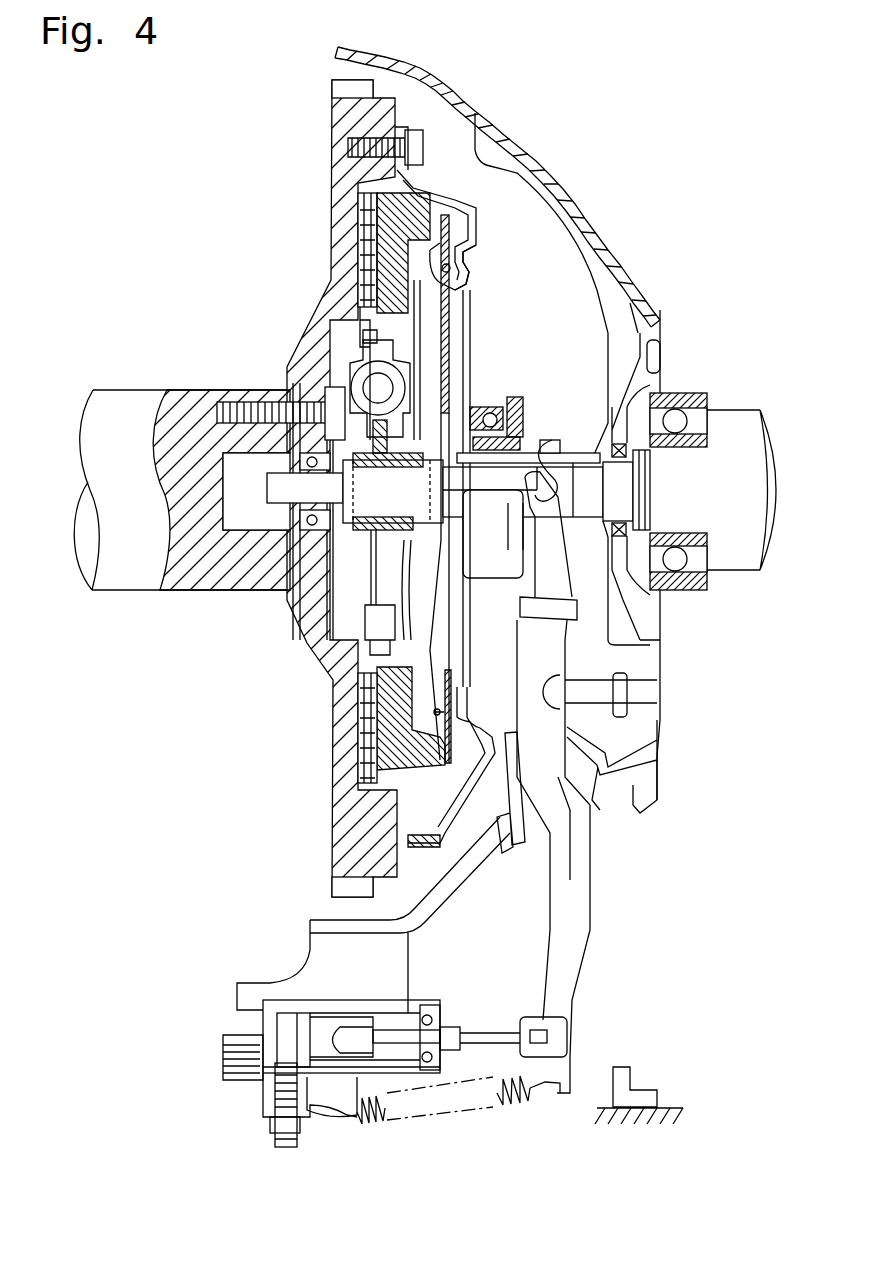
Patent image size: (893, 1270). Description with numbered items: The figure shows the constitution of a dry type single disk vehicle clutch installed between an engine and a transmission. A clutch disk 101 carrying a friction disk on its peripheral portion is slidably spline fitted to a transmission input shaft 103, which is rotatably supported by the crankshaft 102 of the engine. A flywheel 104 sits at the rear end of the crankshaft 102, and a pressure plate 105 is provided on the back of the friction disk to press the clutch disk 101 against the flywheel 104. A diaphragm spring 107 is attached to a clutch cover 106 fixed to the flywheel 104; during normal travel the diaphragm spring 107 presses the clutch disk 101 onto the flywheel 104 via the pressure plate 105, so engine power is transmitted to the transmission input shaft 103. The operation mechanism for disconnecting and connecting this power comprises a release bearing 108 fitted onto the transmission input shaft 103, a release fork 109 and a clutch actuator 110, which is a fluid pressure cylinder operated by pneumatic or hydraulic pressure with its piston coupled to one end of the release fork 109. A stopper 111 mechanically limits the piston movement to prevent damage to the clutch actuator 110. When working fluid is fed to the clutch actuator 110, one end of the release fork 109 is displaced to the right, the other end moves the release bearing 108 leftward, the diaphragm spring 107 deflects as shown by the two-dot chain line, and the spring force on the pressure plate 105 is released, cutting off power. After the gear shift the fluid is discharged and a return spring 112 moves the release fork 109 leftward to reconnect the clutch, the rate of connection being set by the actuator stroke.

The clutch disk 101 is at (333, 633).
The crankshaft 102 is at (135, 398).
The transmission input shaft 103 is at (578, 467).
The flywheel 104 is at (335, 230).
The pressure plate 105 is at (385, 727).
The clutch cover 106 is at (462, 272).
The diaphragm spring 107 is at (453, 318).
The release bearing 108 is at (490, 402).
The release fork 109 is at (567, 878).
The clutch actuator 110 is at (343, 1000).
The stopper 111 is at (630, 1067).
The return spring 112 is at (447, 1118).